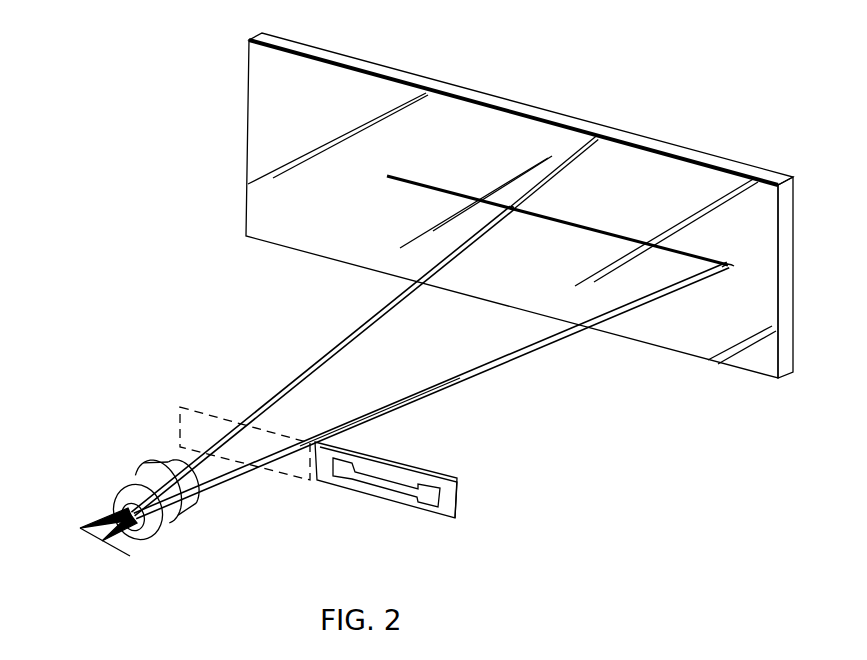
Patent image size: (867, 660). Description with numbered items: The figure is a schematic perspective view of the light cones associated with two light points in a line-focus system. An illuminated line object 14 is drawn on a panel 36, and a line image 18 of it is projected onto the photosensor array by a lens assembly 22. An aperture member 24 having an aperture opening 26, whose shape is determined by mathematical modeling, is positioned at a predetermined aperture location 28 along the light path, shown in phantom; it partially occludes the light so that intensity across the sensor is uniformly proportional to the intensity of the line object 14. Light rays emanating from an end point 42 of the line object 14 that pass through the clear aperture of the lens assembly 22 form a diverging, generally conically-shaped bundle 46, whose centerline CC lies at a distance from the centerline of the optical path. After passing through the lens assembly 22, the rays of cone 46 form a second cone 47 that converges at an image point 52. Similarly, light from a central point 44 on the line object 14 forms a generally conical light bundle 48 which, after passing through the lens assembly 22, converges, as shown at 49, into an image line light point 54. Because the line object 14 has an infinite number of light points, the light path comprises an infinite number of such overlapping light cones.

The illuminated line object 14 is at (407, 183).
The line image 18 is at (127, 556).
The lens assembly 22 is at (140, 470).
The aperture member 24 is at (462, 487).
The aperture opening 26 is at (437, 502).
The aperture location 28 is at (213, 412).
The window panel 36 is at (519, 205).
The end point 42 is at (727, 264).
The beam impingement point 44 is at (512, 208).
The conically-shaped bundle 46 is at (472, 370).
The second cone 47 is at (111, 507).
The conical light bundle 48 is at (343, 348).
The converging light bundle 49 is at (152, 531).
The image point 52 is at (87, 528).
The image line light point 54 is at (102, 543).
The centerline of outside cone CC is at (420, 394).